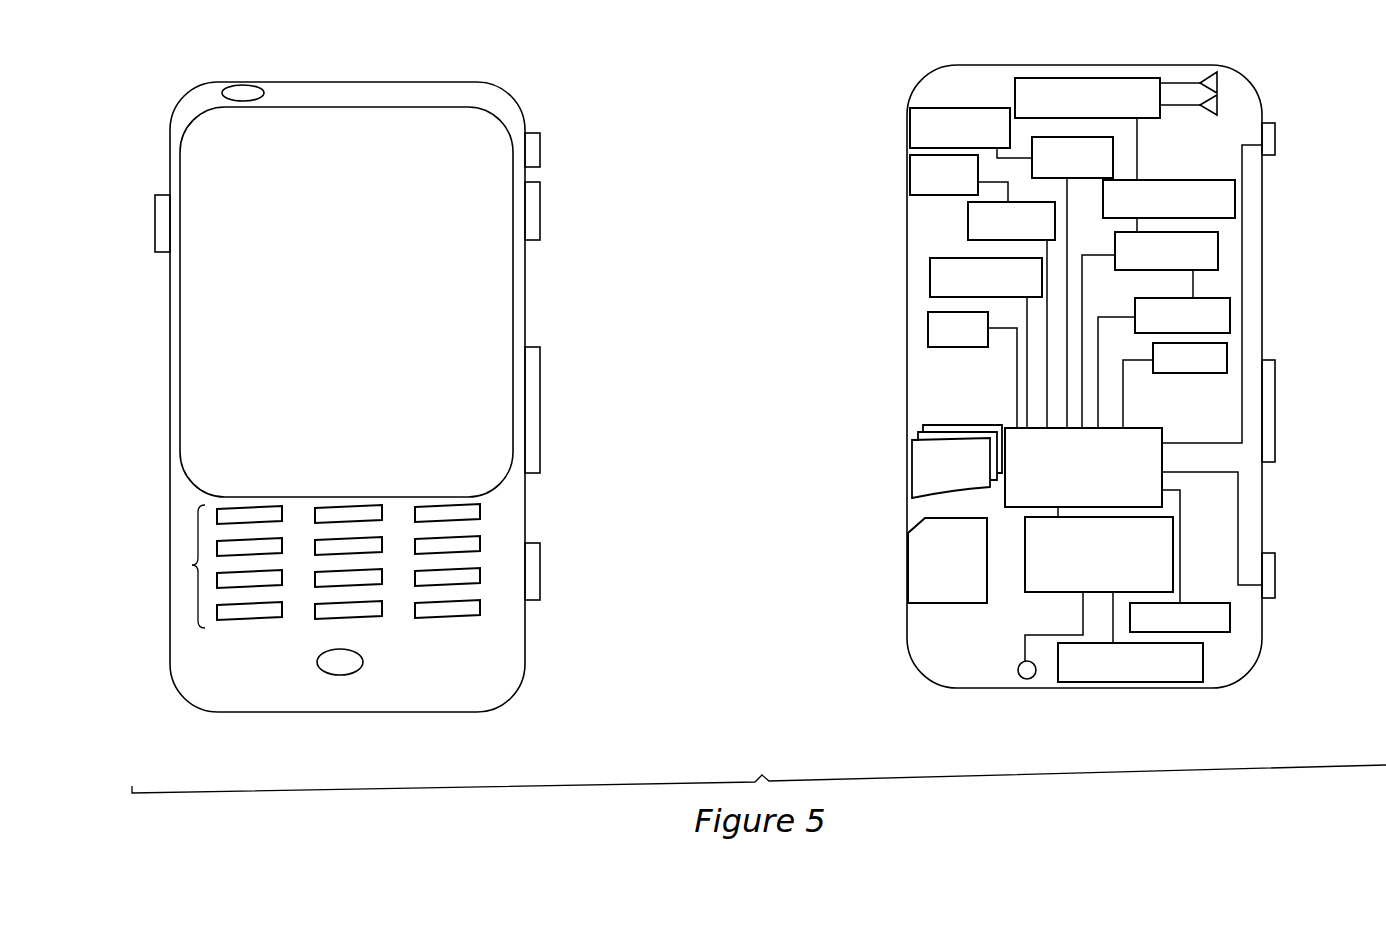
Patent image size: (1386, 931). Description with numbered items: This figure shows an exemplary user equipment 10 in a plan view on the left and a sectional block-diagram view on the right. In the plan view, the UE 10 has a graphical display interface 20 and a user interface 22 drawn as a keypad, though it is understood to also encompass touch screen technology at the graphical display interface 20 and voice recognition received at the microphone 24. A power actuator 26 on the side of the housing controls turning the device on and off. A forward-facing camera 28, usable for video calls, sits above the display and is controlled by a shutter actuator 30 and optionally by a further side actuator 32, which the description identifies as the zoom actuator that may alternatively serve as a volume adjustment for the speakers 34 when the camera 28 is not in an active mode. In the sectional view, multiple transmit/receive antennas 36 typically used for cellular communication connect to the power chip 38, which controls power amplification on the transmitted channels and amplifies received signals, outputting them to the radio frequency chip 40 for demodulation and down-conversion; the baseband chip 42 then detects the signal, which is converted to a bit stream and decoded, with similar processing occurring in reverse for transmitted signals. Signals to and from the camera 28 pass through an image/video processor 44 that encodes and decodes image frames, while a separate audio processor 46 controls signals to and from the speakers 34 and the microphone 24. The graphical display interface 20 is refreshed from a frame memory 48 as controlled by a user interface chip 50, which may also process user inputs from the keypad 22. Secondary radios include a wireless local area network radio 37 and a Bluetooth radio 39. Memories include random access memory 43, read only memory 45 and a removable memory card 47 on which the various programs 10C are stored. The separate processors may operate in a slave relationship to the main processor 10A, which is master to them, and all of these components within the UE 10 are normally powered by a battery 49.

The user equipment 10 is at (522, 743).
The main processor 10A is at (1015, 438).
The programs 10C is at (918, 477).
The graphical display interface 20 is at (203, 320).
The user interface 22 is at (190, 565).
The microphone 24 is at (345, 665).
The power actuator 26 is at (533, 146).
The camera 28 is at (247, 88).
The shutter actuator 30 is at (533, 563).
The side button 32 is at (533, 390).
The speakers 34 is at (160, 196).
The transmit/receive antennas 36 is at (1217, 78).
The WLAN radio 37 is at (935, 290).
The power chip 38 is at (1080, 82).
The Bluetooth radio 39 is at (935, 338).
The radio frequency chip 40 is at (1225, 205).
The baseband chip 42 is at (1212, 258).
The random access memory 43 is at (1225, 318).
The image/video processor 44 is at (1108, 168).
The read only memory 45 is at (1225, 355).
The audio processor 46 is at (975, 230).
The memory card 47 is at (912, 542).
The frame memory 48 is at (1130, 682).
The battery 49 is at (1228, 630).
The user interface chip 50 is at (1050, 583).